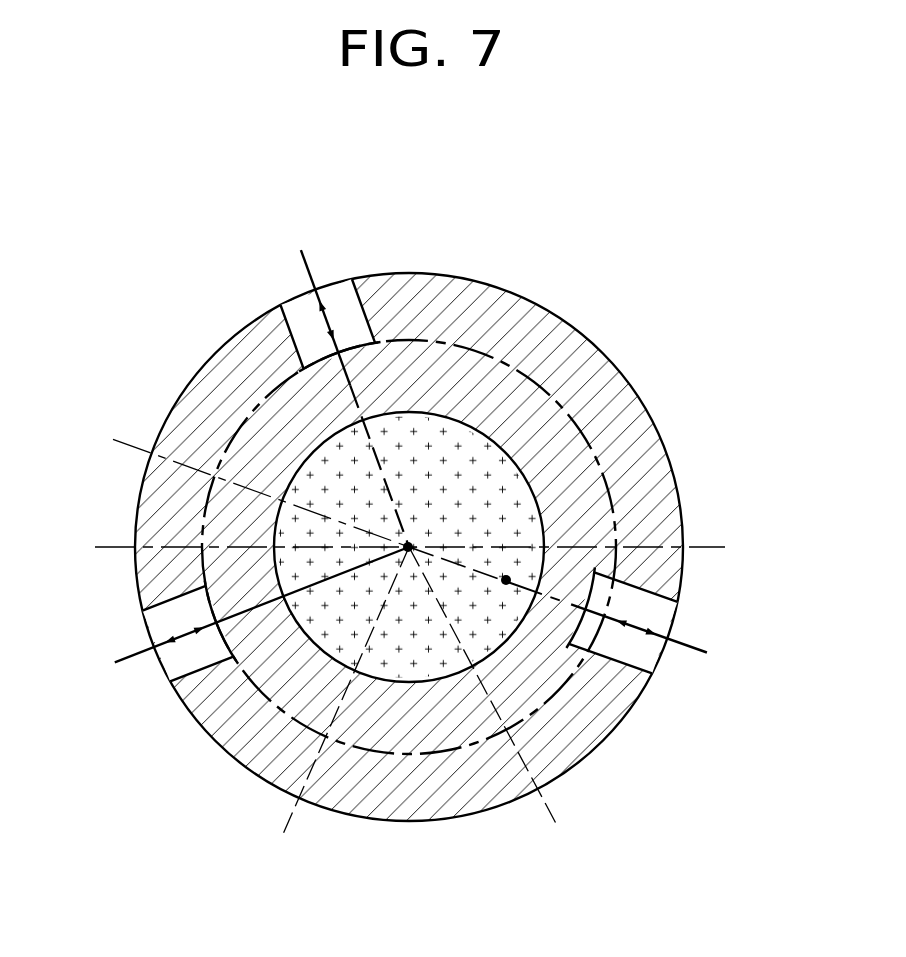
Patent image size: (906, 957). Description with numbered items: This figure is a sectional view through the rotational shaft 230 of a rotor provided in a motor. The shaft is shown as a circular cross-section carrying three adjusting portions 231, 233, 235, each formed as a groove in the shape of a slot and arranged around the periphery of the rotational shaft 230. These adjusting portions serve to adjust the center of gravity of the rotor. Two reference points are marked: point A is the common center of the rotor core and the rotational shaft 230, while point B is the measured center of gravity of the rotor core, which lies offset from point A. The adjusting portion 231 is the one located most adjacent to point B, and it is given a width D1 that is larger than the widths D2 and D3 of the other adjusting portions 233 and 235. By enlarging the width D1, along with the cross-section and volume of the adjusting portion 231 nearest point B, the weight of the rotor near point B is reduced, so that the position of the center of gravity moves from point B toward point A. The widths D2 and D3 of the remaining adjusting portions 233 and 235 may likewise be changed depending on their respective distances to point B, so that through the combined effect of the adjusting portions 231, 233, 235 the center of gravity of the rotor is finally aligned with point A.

The rotational shaft 230 is at (650, 488).
The adjusting portion 231 is at (647, 647).
The adjusting portion 233 is at (175, 660).
The adjusting portion 235 is at (303, 325).
The width D1 is at (632, 617).
The width D2 is at (183, 632).
The width D3 is at (330, 327).
The point A is at (408, 550).
The point B is at (506, 582).